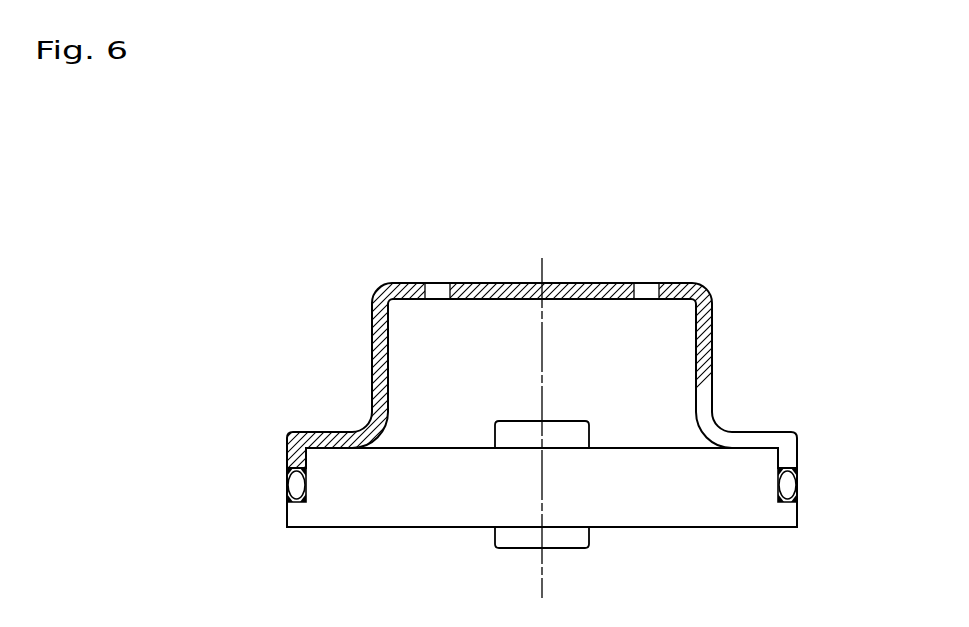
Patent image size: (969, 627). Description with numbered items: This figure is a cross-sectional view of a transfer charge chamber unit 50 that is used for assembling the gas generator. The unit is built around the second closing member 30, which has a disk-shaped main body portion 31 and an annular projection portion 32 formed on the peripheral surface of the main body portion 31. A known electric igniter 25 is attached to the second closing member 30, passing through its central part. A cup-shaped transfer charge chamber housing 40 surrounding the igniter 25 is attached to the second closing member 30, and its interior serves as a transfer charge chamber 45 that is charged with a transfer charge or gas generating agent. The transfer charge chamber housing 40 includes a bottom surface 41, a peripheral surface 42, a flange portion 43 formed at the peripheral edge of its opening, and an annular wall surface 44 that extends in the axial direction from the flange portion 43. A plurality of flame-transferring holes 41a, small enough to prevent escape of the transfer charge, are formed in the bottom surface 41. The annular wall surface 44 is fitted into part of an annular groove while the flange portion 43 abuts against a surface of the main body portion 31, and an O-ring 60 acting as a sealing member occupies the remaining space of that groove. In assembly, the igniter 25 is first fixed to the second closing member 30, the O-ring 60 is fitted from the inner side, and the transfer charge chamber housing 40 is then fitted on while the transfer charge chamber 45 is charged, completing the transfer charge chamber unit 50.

The electric igniter 25 is at (517, 430).
The second closing member 30 is at (640, 509).
The main body portion 31 is at (378, 515).
The annular projection portion 32 is at (297, 513).
The transfer charge chamber housing 40 is at (678, 281).
The bottom surface 41 is at (593, 283).
The flame-transferring holes 41a is at (433, 283).
The peripheral surface 42 is at (713, 328).
The flange portion 43 is at (752, 432).
The annular wall surface 44 is at (797, 453).
The transfer charge chamber 45 is at (618, 382).
The transfer charge chamber unit 50 is at (507, 280).
The O-ring 60 is at (297, 484).